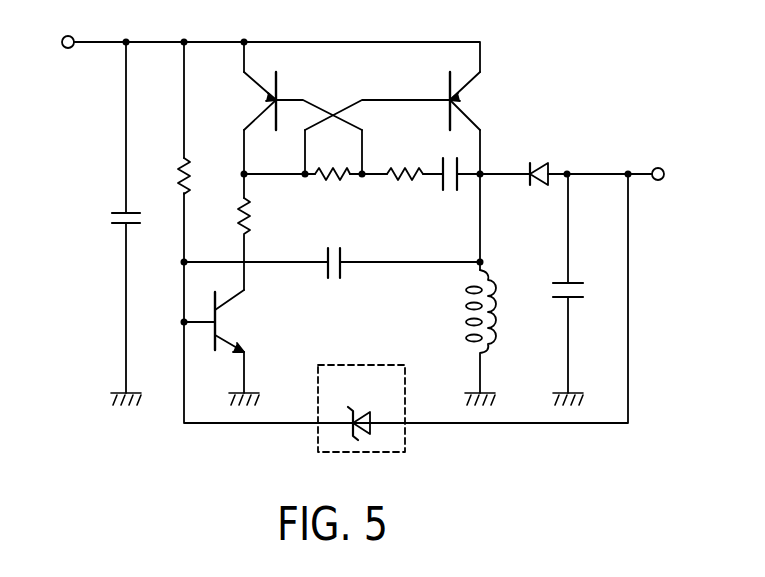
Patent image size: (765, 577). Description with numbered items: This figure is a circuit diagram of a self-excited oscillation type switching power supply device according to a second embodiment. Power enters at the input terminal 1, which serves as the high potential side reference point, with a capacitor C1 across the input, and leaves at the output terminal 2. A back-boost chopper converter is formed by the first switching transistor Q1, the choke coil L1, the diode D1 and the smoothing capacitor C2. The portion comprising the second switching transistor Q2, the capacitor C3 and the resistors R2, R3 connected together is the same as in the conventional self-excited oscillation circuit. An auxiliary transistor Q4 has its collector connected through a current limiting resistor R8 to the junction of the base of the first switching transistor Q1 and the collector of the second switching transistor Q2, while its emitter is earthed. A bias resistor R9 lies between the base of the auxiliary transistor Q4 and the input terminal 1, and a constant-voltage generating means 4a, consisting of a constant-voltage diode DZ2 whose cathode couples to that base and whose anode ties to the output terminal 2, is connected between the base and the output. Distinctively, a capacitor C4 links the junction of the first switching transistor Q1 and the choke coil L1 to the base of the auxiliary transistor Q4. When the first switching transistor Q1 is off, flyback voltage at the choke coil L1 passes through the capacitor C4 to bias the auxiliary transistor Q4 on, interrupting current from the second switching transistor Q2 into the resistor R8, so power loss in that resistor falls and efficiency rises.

The input terminal 1 is at (65, 34).
The output terminal 2 is at (666, 165).
The constant-voltage generating means 4a is at (372, 362).
The capacitor C1 is at (114, 239).
The smoothing capacitor C2 is at (555, 312).
The capacitor C3 is at (447, 193).
The capacitor C4 is at (333, 282).
The resistor R2 is at (401, 198).
The resistor R3 is at (332, 198).
The current limiting resistor R8 is at (265, 227).
The bias resistor R9 is at (170, 163).
The first switching transistor Q1 is at (413, 101).
The second switching transistor Q2 is at (283, 101).
The auxiliary transistor Q4 is at (234, 321).
The diode D1 is at (538, 196).
The constant-voltage diode DZ2 is at (363, 409).
The choke coil L1 is at (463, 331).